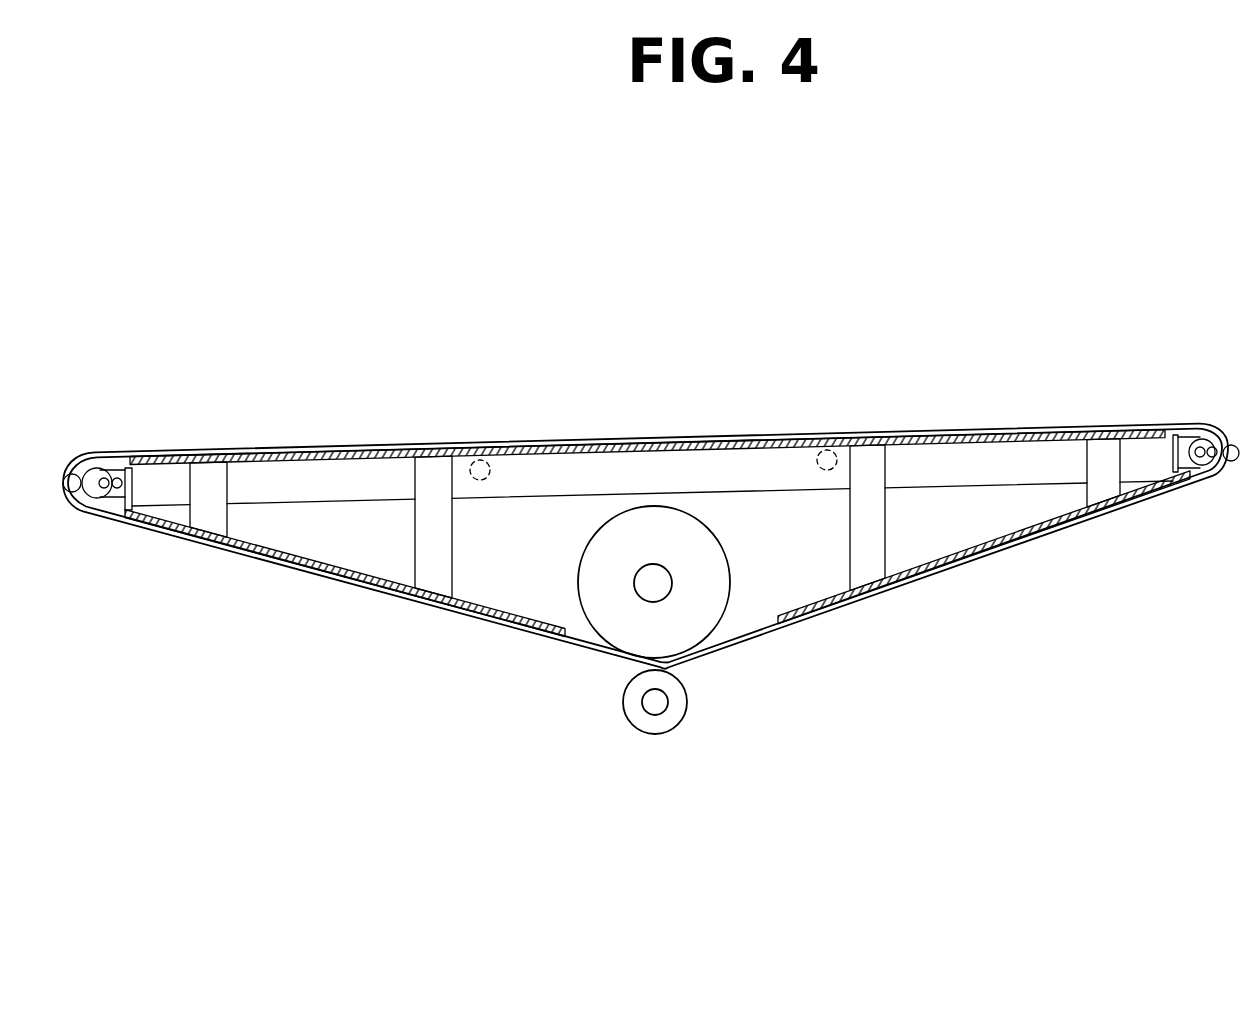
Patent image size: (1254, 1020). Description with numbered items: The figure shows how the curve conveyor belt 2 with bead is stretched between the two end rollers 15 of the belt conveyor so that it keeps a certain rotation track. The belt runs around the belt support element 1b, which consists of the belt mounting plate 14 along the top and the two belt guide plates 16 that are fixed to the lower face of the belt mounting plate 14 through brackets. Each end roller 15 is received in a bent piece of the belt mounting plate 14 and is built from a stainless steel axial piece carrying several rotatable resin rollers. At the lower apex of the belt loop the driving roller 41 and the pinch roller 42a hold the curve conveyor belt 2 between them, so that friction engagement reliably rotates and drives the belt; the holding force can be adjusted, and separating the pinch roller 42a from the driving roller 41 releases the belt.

The belt support element 1b is at (255, 295).
The curve conveyor belt 2 is at (932, 430).
The belt mounting plate 14 is at (403, 446).
The end roller 15 is at (110, 453).
The belt guide plate 16 is at (300, 556).
The driving roller 41 is at (698, 607).
The pinch roller 42a is at (672, 718).